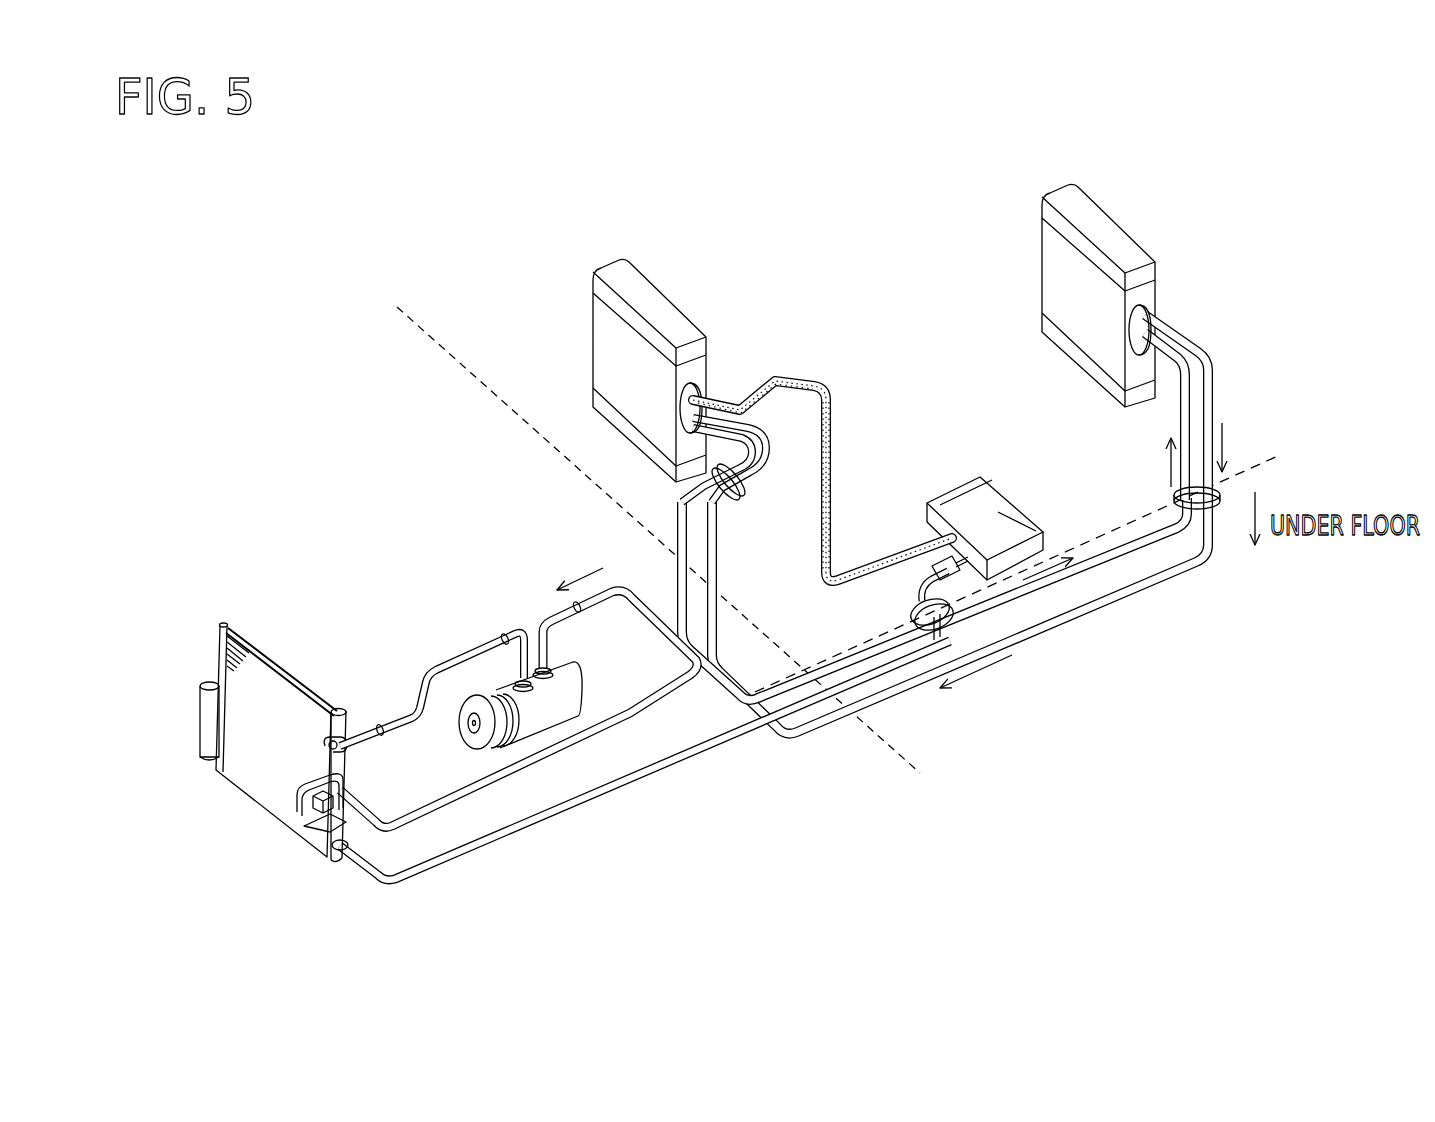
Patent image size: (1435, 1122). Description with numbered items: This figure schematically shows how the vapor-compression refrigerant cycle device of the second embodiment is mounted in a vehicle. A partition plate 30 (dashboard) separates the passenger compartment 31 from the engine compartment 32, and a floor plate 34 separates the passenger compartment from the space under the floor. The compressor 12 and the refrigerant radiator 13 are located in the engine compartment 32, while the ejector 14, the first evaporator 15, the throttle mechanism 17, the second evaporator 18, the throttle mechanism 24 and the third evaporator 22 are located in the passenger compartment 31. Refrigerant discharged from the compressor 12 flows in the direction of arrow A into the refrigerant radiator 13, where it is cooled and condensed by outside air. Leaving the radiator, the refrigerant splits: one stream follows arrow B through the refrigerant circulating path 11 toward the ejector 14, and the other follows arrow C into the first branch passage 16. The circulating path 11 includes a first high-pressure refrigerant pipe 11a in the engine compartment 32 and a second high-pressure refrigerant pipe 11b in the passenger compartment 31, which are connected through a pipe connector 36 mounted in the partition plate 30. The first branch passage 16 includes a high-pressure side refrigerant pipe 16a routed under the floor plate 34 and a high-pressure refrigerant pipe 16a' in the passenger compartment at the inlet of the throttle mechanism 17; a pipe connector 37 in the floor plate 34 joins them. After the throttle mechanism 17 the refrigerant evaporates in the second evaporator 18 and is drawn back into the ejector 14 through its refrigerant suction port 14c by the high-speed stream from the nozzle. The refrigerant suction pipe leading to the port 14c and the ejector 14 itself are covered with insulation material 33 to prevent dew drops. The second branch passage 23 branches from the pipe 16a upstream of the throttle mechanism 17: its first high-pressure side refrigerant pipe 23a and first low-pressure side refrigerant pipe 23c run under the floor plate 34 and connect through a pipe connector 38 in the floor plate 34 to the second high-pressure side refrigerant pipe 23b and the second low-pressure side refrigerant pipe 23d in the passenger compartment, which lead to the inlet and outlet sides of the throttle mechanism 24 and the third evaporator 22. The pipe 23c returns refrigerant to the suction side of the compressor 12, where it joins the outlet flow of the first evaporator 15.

The refrigerant circulating path 11 is at (697, 690).
The first high-pressure refrigerant pipe 11a is at (630, 713).
The second high-pressure refrigerant pipe 11b is at (760, 477).
The compressor 12 is at (530, 712).
The refrigerant radiator 13 is at (295, 725).
The ejector 14 is at (717, 396).
The refrigerant suction port 14c is at (728, 397).
The first evaporator 15 is at (617, 356).
The first branch passage 16 is at (573, 808).
The high-pressure side refrigerant pipe 16a is at (610, 794).
The high-pressure refrigerant pipe 16a' is at (920, 674).
The throttle mechanism 17 is at (923, 562).
The second evaporator 18 is at (983, 510).
The third evaporator 22 is at (1063, 282).
The second branch passage 23 is at (1102, 572).
The first high-pressure side refrigerant pipe 23a is at (1137, 557).
The second high-pressure side refrigerant pipe 23b is at (1180, 427).
The first low-pressure side refrigerant pipe 23c is at (1203, 562).
The second low-pressure side refrigerant pipe 23d is at (1215, 387).
The throttle mechanism 24 is at (1153, 310).
The partition plate 30 is at (540, 430).
The passenger compartment 31 is at (432, 308).
The engine compartment 32 is at (392, 330).
The insulation material 33 is at (832, 460).
The floor plate 34 is at (1258, 462).
The pipe connector 36 is at (730, 497).
The pipe connector 37 is at (953, 617).
The pipe connector 38 is at (1177, 490).
The arrow A is at (477, 633).
The arrow B is at (450, 786).
The arrow C is at (480, 861).